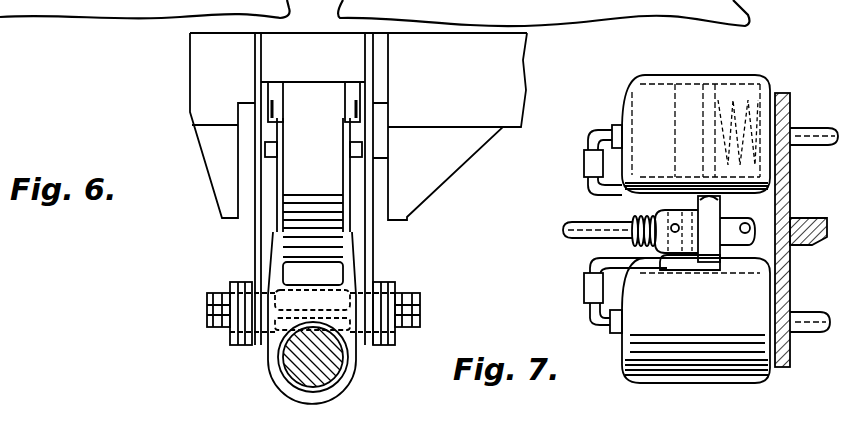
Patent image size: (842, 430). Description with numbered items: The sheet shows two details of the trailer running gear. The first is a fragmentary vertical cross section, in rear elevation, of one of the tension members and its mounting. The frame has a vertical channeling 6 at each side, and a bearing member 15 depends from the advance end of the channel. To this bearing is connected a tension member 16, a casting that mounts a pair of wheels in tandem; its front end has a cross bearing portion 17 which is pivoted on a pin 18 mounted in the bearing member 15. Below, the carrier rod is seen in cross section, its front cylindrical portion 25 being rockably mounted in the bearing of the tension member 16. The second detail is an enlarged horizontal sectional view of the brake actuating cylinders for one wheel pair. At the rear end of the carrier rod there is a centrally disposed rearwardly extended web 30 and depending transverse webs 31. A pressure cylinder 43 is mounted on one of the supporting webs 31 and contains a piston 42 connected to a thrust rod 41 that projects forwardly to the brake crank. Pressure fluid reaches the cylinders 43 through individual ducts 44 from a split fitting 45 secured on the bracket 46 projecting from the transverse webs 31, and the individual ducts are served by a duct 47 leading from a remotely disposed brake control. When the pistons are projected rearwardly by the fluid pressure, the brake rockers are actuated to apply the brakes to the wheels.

In FIG. 6, the vertical channeling 6 is at (258, 128).
In FIG. 6, the bearing member 15 is at (380, 240).
In FIG. 6, the tension member 16 is at (268, 303).
In FIG. 6, the cross bearing portion 17 is at (367, 290).
In FIG. 6, the pin 18 is at (240, 330).
In FIG. 6, the front cylindrical portion 25 is at (327, 360).
In FIG. 7, the rearwardly extended web 30 is at (812, 245).
In FIG. 7, the depending transverse webs 31 is at (790, 188).
In FIG. 7, the thrust rod 41 is at (813, 130).
In FIG. 7, the piston 42 is at (677, 97).
In FIG. 7, the pressure cylinder 43 is at (733, 72).
In FIG. 7, the individual ducts 44 is at (598, 188).
In FIG. 7, the split fitting 45 is at (735, 247).
In FIG. 7, the bracket 46 is at (672, 262).
In FIG. 7, the duct 47 is at (576, 237).